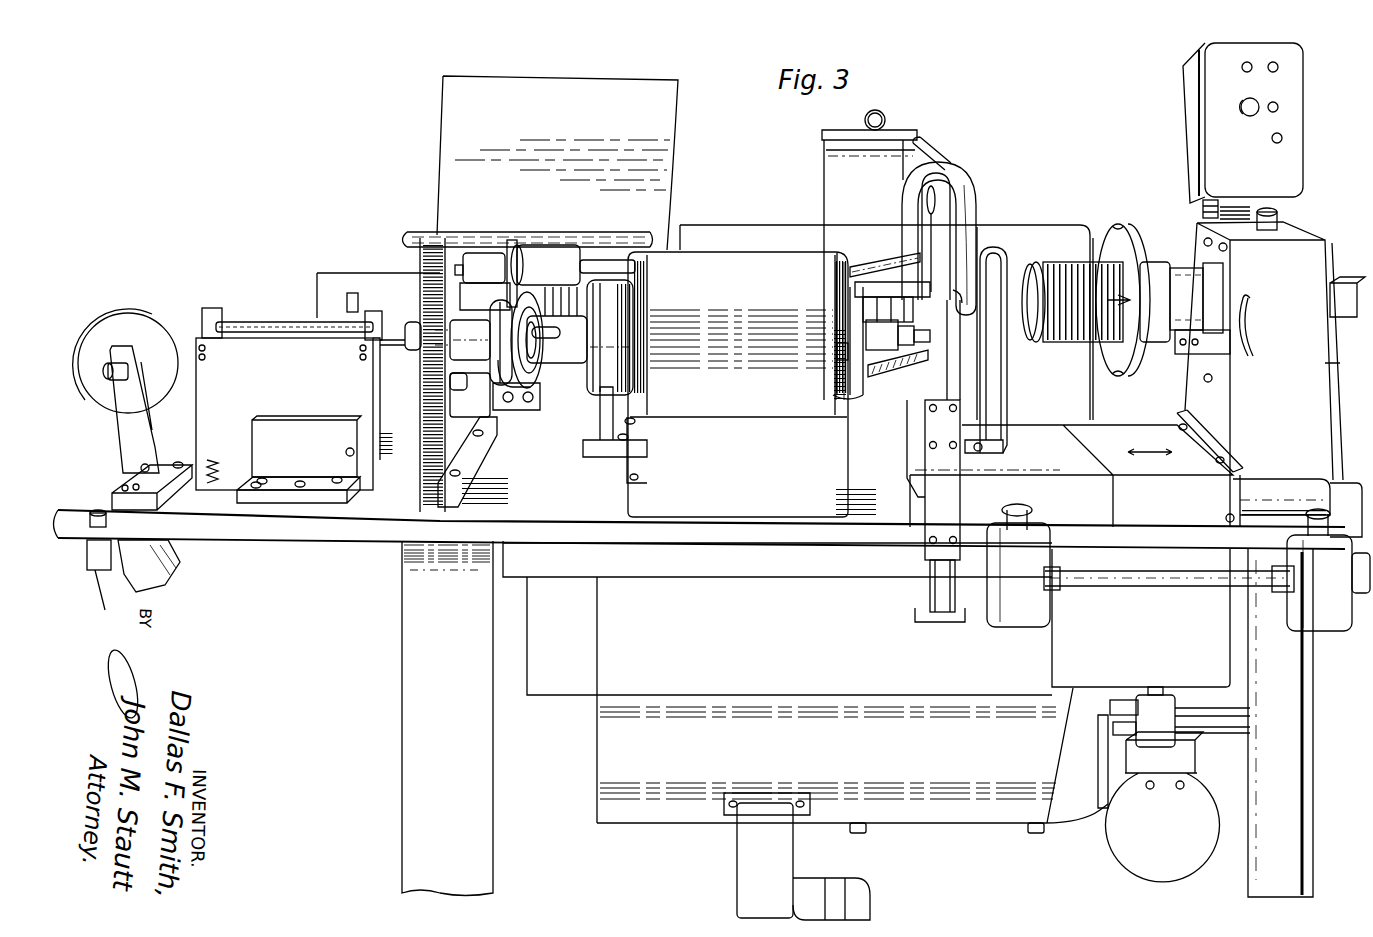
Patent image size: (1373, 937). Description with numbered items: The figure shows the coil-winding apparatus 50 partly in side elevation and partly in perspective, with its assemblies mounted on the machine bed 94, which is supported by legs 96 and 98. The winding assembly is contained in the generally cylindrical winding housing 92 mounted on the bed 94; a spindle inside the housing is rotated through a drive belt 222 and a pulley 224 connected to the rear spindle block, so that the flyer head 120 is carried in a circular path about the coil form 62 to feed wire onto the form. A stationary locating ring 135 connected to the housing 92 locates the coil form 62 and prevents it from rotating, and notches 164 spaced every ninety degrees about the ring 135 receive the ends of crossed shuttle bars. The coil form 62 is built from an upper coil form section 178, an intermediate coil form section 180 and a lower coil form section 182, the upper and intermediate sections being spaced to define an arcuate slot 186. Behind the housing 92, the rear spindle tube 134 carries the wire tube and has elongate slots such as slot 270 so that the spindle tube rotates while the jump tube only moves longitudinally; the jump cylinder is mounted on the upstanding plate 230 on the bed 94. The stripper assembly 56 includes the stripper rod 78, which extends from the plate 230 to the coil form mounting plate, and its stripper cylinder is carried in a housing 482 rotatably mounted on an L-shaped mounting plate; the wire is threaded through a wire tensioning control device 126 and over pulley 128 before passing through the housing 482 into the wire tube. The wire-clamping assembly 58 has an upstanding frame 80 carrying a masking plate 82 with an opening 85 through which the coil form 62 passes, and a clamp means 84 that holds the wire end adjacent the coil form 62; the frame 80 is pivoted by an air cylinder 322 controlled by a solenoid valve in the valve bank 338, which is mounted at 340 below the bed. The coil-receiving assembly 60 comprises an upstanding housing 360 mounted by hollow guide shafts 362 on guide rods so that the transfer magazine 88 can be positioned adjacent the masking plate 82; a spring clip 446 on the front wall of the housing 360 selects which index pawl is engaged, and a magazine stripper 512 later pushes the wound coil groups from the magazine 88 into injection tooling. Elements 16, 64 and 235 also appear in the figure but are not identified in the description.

The reel arm 16 is at (90, 433).
The apparatus 50 is at (734, 219).
The stripper assembly 56 is at (271, 313).
The wire-clamping assembly 58 is at (979, 170).
The coil-receiving assembly 60 is at (1319, 222).
The coil form 62 is at (887, 387).
The spindle support 64 is at (860, 424).
The stripper rod 78 is at (413, 357).
The frame 80 is at (981, 189).
The masking plate 82 is at (947, 164).
The clamp means 84 is at (547, 394).
The opening 85 is at (930, 397).
The transfer magazine 88 is at (1068, 350).
The winding housing 92 is at (745, 244).
The machine bed 94 is at (298, 532).
The leg 96 is at (403, 630).
The leg 98 is at (1313, 712).
The flyer head portion 120 is at (880, 262).
The wire tensioning control device 126 is at (91, 563).
The pulley 128 is at (150, 322).
The rear spindle tube 134 is at (559, 380).
The locating ring 135 is at (838, 283).
The notches 164 is at (828, 362).
The upper coil form section 178 is at (892, 312).
The intermediate coil form section 180 is at (920, 338).
The lower coil form section 182 is at (880, 372).
The arcuate slot 186 is at (237, 494).
The drive belt 222 is at (623, 300).
The pulley 224 is at (587, 397).
The upstanding plate 230 is at (437, 268).
The cylinder 235 is at (488, 412).
The elongate slot 270 is at (565, 332).
The air cylinder 322 is at (943, 622).
The valve bank 338 is at (1052, 655).
The valve bank mounting location 340 is at (917, 588).
The upstanding housing 360 is at (1336, 265).
The hollow guide shafts 362 is at (1292, 483).
The spring clip 446 is at (1250, 325).
The housing 482 is at (304, 401).
The magazine stripper 512 is at (1138, 247).